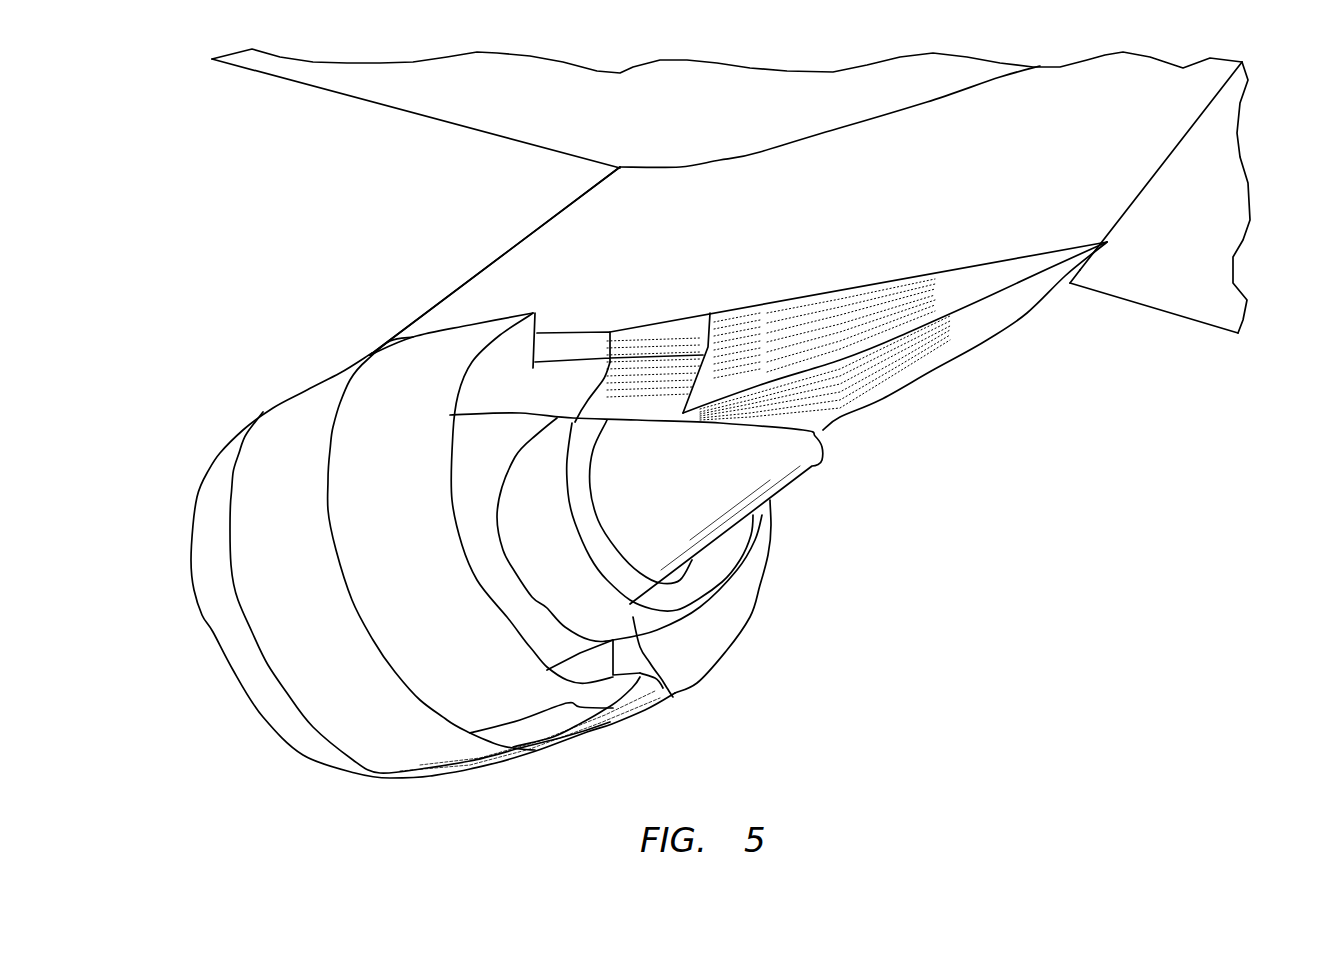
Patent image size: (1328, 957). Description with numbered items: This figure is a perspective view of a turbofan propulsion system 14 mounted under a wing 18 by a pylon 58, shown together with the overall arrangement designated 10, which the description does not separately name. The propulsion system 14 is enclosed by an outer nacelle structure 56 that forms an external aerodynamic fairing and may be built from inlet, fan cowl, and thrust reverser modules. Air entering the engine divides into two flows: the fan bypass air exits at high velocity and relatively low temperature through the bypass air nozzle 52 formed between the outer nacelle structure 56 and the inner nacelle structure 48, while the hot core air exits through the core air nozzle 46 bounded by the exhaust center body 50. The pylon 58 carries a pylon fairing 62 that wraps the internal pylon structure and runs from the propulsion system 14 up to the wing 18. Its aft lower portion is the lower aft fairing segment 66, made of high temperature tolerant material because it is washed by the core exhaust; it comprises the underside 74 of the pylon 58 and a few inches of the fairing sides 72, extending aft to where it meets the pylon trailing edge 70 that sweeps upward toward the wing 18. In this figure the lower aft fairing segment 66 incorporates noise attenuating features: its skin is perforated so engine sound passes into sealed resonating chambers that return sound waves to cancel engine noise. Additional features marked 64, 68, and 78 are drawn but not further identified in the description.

The aircraft 10 is at (120, 186).
The propulsion system 14 is at (260, 753).
The wing 18 is at (350, 94).
The core air nozzle 46 is at (707, 577).
The inner nacelle structure 48 is at (668, 690).
The exhaust center body 50 is at (798, 482).
The bypass air nozzle 52 is at (717, 637).
The outer nacelle structure 56 is at (478, 777).
The pylon 58 is at (517, 240).
The pylon fairing 62 is at (475, 230).
The fuselage strake 64 is at (1177, 128).
The lower aft fairing segment 66 is at (930, 383).
The pylon upper surface 68 is at (448, 294).
The pylon trailing edge 70 is at (1183, 137).
The fairing sides 72 is at (1027, 313).
The underside 74 is at (860, 390).
The fairing upper edge 78 is at (936, 268).